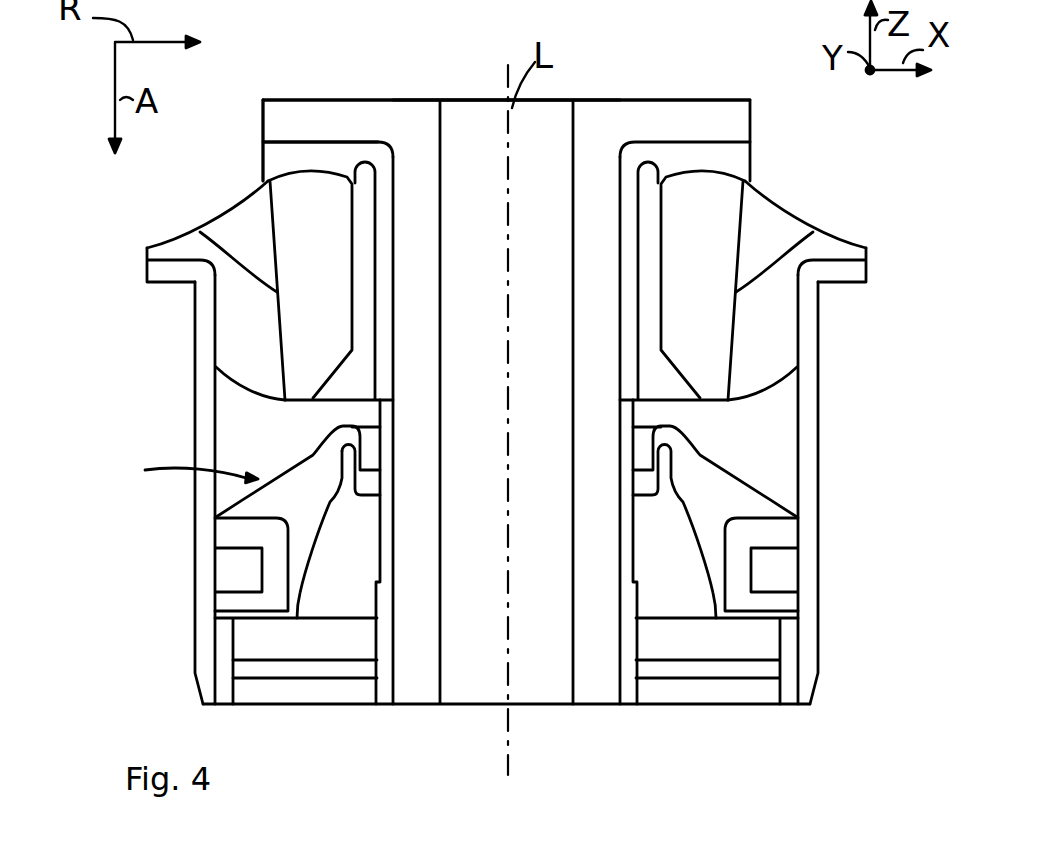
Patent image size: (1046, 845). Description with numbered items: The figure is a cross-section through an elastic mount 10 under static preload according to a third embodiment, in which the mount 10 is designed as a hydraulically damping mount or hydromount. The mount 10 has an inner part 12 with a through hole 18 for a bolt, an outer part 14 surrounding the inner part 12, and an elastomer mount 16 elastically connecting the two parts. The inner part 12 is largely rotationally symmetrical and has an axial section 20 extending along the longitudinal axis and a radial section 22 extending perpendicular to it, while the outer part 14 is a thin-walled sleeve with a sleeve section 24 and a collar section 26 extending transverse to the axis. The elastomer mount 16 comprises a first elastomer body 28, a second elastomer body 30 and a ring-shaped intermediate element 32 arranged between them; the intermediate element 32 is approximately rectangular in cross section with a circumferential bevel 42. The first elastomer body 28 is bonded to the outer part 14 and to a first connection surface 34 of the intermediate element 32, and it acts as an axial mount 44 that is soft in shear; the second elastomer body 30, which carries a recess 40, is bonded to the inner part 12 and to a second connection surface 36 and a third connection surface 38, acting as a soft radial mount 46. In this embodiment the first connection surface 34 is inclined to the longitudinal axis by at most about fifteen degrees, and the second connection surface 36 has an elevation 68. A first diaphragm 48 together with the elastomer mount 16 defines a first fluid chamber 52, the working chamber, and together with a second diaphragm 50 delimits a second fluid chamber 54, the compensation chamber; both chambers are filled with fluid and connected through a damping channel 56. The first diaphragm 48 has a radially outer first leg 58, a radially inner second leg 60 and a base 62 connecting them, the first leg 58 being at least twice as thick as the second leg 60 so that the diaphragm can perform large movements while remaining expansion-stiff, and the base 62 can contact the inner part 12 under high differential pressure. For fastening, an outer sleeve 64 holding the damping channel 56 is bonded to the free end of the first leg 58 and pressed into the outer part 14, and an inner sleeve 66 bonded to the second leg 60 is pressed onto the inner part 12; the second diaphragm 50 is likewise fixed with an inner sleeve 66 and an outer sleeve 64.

The mount 10 is at (757, 55).
The inner part 12 is at (397, 100).
The outer part 14 is at (818, 468).
The elastomer mount 16 is at (808, 170).
The through hole 18 is at (572, 128).
The axial section 20 is at (427, 257).
The radial section 22 is at (338, 108).
The sleeve section 24 is at (812, 552).
The collar section 26 is at (847, 277).
The first elastomer body 28 is at (230, 227).
The second elastomer body 30 is at (290, 98).
The intermediate element 32 is at (284, 200).
The first connection surface 34 is at (200, 230).
The second connection surface 36 is at (742, 163).
The third connection surface 38 is at (664, 240).
The recess 40 is at (368, 215).
The circumferential bevel 42 is at (677, 378).
The axial mount 44 is at (235, 345).
The radial mount 46 is at (705, 158).
The first diaphragm 48 is at (178, 475).
The second diaphragm 50 is at (307, 699).
The first fluid chamber 52 is at (772, 434).
The second fluid chamber 54 is at (745, 645).
The damping channel 56 is at (235, 573).
The first leg 58 is at (303, 483).
The second leg 60 is at (362, 440).
The base 62 is at (338, 432).
The outer sleeve 64 is at (220, 533).
The inner sleeve 66 is at (392, 526).
The elevation 68 is at (313, 175).